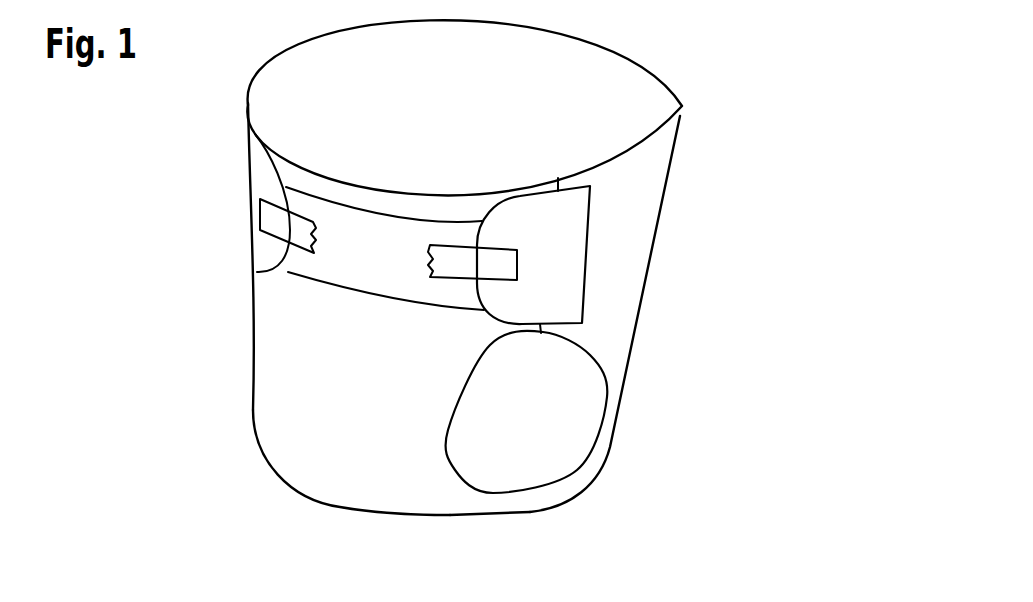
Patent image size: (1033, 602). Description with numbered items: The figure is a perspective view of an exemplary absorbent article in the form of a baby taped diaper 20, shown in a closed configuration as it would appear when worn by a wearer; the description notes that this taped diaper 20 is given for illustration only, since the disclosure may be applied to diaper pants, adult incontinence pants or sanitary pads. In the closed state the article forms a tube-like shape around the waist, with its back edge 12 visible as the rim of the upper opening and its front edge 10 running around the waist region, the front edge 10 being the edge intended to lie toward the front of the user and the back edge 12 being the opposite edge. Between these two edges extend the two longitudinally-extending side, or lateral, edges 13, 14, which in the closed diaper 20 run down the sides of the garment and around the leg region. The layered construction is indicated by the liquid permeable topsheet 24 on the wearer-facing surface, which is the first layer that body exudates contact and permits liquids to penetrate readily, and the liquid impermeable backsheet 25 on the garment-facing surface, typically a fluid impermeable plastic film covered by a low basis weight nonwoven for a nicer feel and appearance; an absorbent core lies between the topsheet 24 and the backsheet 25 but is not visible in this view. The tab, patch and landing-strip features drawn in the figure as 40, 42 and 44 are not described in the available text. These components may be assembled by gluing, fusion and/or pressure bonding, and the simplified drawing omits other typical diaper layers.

The front edge 10 is at (320, 175).
The back edge 12 is at (563, 34).
The side edge 13 is at (251, 394).
The side edge 14 is at (518, 498).
The taped diaper 20 is at (607, 475).
The topsheet 24 is at (586, 423).
The backsheet 25 is at (438, 481).
The fastening tab 40 is at (562, 262).
The fastening element 42 is at (277, 232).
The landing zone 44 is at (370, 284).